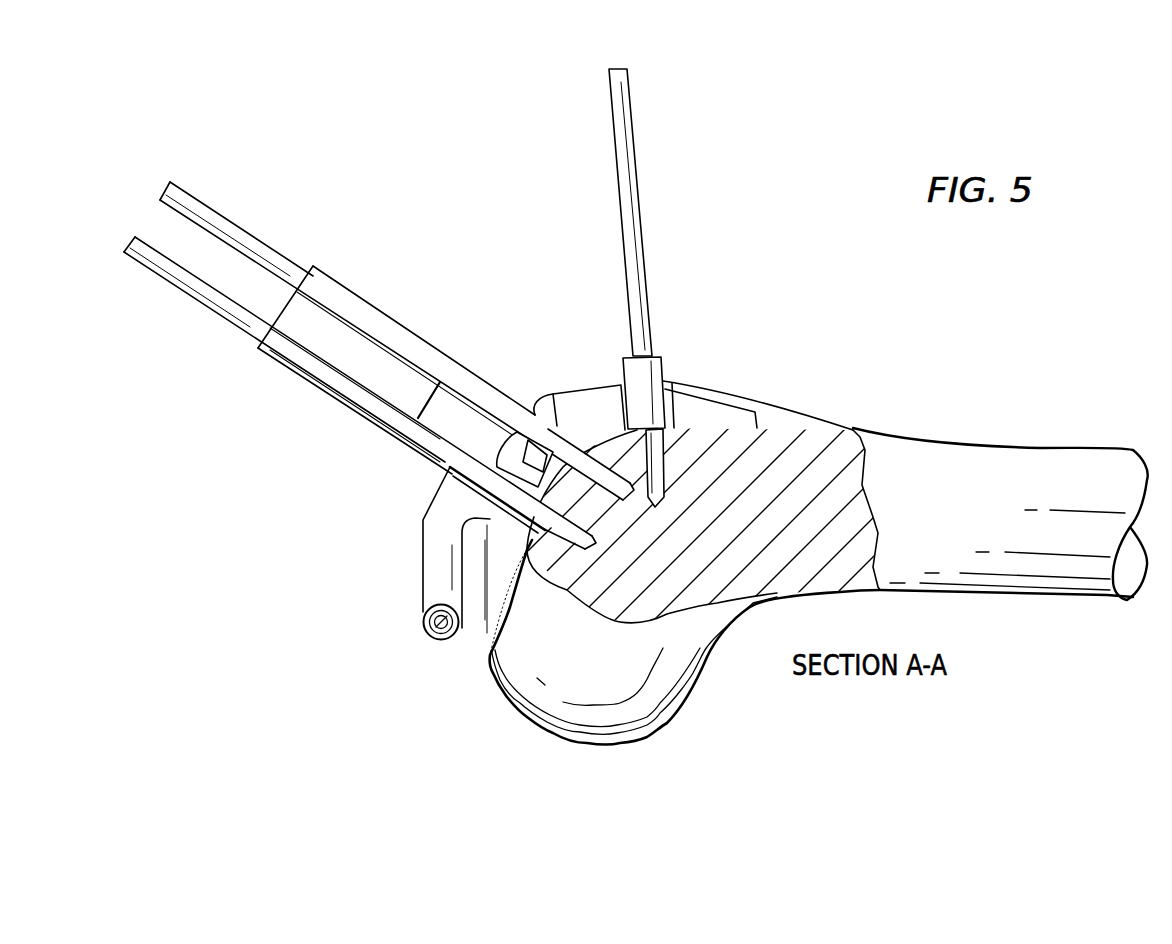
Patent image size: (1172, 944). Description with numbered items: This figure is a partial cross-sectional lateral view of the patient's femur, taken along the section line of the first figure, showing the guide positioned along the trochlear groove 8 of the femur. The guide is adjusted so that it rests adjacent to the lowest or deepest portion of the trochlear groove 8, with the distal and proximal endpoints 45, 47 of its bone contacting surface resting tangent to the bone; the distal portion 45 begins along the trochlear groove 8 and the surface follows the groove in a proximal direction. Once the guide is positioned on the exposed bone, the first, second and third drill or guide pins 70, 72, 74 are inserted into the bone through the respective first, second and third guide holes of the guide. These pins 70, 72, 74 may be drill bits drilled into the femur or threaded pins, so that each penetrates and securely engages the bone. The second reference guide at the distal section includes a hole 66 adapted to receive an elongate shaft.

The trochlear groove 8 is at (690, 428).
The distal portion of bone contacting surface 45 is at (490, 655).
The proximal endpoint of bone contacting surface 47 is at (758, 430).
The hole 66 is at (432, 641).
The first guide pin 70 is at (633, 128).
The second guide pin 72 is at (200, 200).
The third guide pin 74 is at (242, 333).